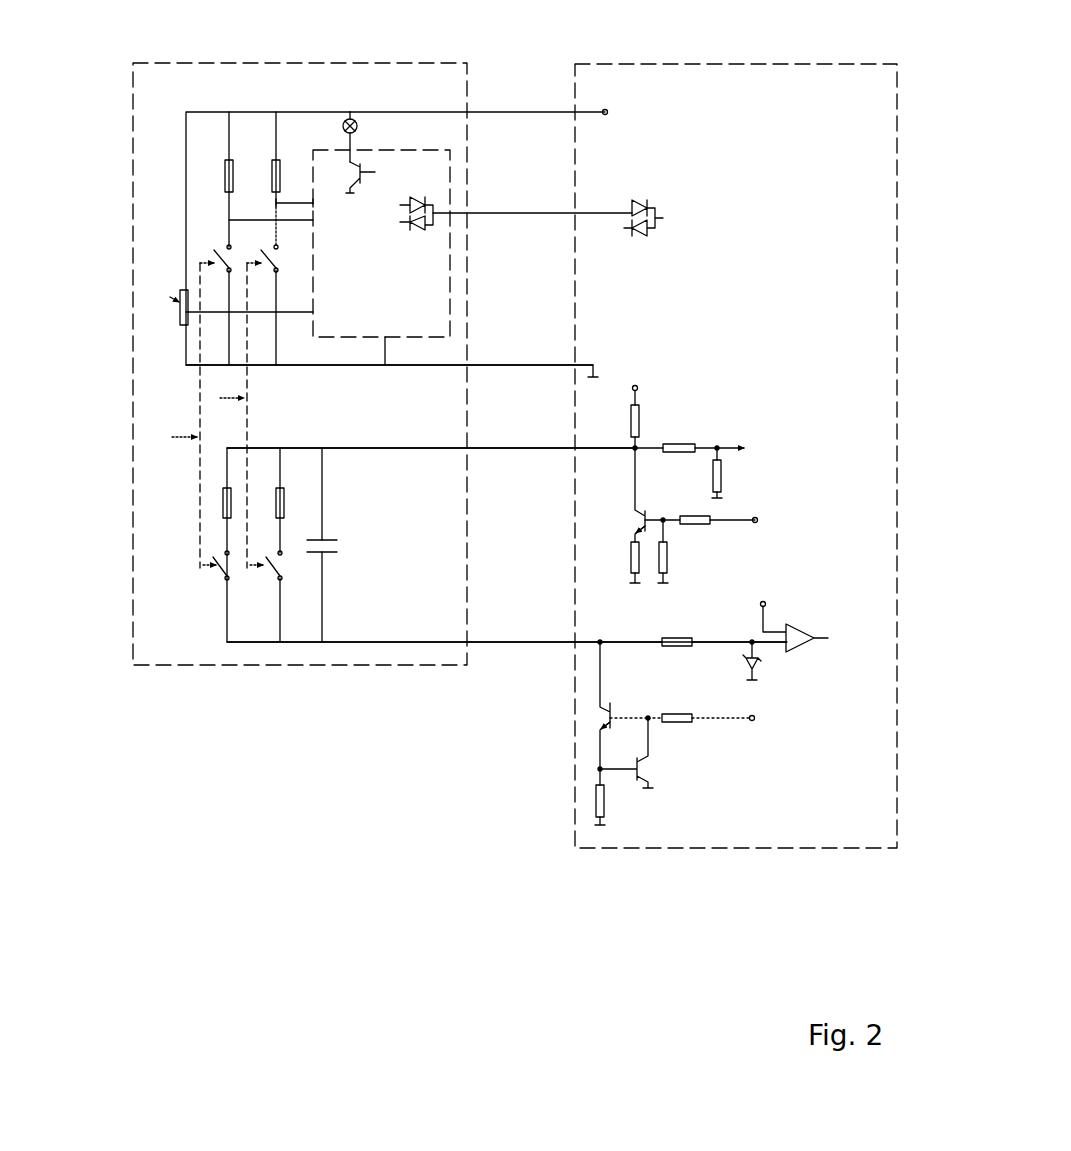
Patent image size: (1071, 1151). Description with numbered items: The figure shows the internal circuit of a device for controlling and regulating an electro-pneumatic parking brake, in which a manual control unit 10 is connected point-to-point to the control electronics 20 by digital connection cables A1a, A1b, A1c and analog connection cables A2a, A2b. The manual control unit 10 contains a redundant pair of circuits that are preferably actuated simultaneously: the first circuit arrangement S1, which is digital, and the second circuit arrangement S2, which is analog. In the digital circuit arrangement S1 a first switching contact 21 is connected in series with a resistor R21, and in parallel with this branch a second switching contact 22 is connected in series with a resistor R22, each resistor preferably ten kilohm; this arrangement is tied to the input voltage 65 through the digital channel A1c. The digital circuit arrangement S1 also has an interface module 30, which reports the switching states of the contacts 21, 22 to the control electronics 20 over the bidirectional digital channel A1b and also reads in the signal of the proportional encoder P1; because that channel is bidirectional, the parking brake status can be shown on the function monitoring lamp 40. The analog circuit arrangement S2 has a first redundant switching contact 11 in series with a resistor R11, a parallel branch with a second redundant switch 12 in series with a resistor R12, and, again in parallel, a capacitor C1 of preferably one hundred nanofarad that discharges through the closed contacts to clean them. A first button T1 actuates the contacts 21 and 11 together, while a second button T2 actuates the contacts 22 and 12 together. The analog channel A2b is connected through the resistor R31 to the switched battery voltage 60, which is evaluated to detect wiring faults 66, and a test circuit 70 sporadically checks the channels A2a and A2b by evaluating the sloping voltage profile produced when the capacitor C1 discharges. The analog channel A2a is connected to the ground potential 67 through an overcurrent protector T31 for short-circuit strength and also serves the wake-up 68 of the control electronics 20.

The manual control unit 10 is at (130, 222).
The control electronics 20 is at (903, 356).
The interface module 30 is at (442, 306).
The function monitoring lamp 40 is at (356, 118).
The first circuit arrangement S1 is at (226, 110).
The second circuit arrangement S2 is at (264, 647).
The resistor R21 is at (226, 174).
The resistor R22 is at (278, 156).
The first switching contact 21 is at (226, 246).
The second switching contact 22 is at (273, 257).
The proportional encoder P1 is at (162, 295).
The first button T1 is at (178, 430).
The second button T2 is at (226, 384).
The digital connection cable A1a is at (512, 368).
The digital connection cable A1b is at (575, 216).
The digital connection cable A1c is at (501, 114).
The analog connection cable A2a is at (501, 647).
The analog connection cable A2b is at (512, 452).
The resistor R11 is at (220, 490).
The resistor R12 is at (287, 507).
The capacitor C1 is at (333, 544).
The first redundant switching contact 11 is at (220, 552).
The second redundant switch 12 is at (287, 571).
The battery voltage 60 is at (643, 381).
The resistor R31 is at (645, 421).
The overcurrent protector T31 is at (618, 703).
The input voltage 65 is at (612, 112).
The wiring faults 66 is at (758, 450).
The ground potential 67 is at (778, 605).
The wake-up 68 is at (836, 637).
The test circuit 70 is at (767, 521).